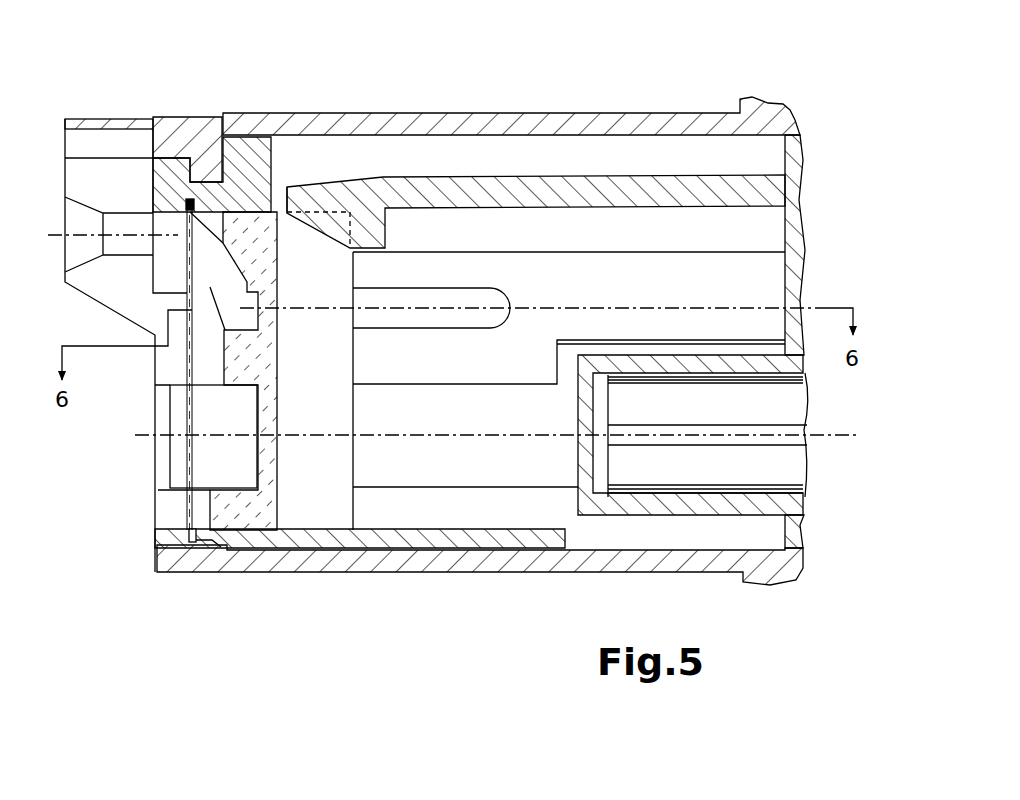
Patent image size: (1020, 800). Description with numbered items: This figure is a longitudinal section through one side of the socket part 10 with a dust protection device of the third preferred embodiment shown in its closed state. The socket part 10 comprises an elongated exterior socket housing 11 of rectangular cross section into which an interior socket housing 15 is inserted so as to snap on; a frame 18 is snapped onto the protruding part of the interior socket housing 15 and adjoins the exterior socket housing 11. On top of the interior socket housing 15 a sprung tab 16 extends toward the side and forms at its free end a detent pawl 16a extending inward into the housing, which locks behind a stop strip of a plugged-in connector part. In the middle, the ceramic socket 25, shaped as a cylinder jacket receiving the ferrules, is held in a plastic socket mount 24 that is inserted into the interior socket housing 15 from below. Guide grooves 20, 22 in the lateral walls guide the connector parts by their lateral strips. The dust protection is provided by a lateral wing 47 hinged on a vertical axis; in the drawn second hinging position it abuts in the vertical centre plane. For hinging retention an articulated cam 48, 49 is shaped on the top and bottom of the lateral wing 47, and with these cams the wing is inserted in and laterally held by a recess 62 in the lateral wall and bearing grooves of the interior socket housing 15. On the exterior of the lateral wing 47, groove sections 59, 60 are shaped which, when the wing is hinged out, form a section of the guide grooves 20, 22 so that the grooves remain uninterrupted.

The socket part 10 is at (683, 76).
The exterior socket housing 11 is at (466, 124).
The interior socket housing 15 is at (797, 255).
The sprung tab 16 is at (574, 195).
The detent pawl 16a is at (337, 190).
The frame 18 is at (186, 140).
The guide groove 20 is at (118, 222).
The guide groove 22 is at (412, 465).
The socket mount 24 is at (790, 506).
The socket 25 is at (800, 470).
The lateral wing 47 is at (236, 515).
The articulated cam 48 is at (175, 558).
The articulated cam 49 is at (188, 198).
The groove section 59 is at (258, 300).
The groove section 60 is at (225, 462).
The recess 62 is at (316, 505).